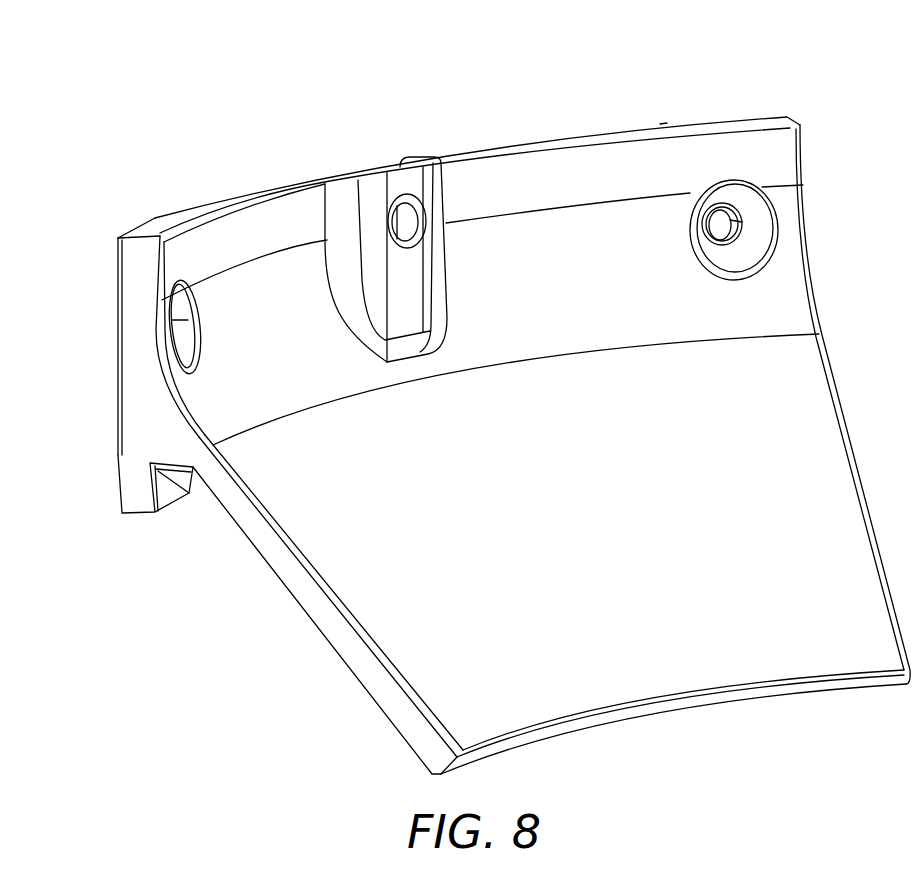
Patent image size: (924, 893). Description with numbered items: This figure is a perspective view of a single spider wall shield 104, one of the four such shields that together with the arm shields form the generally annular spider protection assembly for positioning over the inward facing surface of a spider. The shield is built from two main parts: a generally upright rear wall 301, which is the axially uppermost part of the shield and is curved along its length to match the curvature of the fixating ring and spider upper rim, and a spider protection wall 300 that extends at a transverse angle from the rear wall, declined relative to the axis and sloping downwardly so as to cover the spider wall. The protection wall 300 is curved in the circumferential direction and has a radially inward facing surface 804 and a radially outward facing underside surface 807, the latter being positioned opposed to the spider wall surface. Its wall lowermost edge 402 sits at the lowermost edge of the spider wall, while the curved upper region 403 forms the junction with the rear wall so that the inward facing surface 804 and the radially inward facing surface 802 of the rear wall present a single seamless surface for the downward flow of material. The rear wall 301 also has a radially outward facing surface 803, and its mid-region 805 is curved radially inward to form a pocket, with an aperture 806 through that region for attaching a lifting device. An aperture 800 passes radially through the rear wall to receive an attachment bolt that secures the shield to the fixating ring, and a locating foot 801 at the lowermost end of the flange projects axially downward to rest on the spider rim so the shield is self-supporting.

The spider wall shield 104 is at (804, 90).
The rear wall 301 is at (597, 134).
The mid-region 805 is at (376, 190).
The aperture 806 is at (412, 210).
The radially inward facing surface 802 is at (187, 245).
The aperture 800 is at (748, 217).
The radially outward facing surface 803 is at (116, 280).
The upper region 403 is at (628, 350).
The radially inward facing surface 804 is at (683, 441).
The locating foot 801 is at (130, 488).
The spider protection wall 300 is at (290, 577).
The radially outward facing surface 807 is at (374, 705).
The wall lowermost edge 402 is at (704, 700).